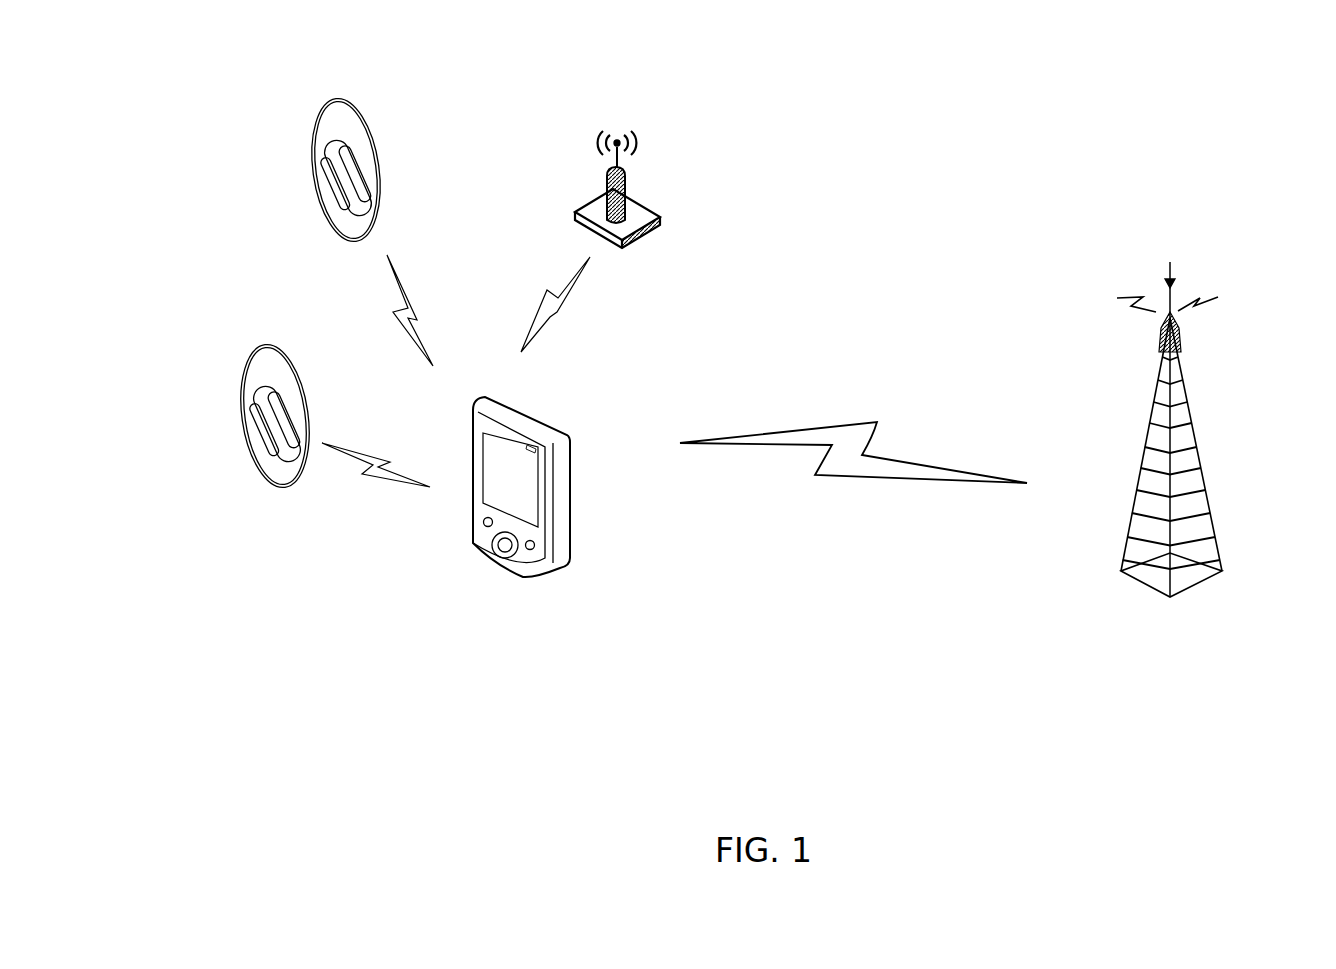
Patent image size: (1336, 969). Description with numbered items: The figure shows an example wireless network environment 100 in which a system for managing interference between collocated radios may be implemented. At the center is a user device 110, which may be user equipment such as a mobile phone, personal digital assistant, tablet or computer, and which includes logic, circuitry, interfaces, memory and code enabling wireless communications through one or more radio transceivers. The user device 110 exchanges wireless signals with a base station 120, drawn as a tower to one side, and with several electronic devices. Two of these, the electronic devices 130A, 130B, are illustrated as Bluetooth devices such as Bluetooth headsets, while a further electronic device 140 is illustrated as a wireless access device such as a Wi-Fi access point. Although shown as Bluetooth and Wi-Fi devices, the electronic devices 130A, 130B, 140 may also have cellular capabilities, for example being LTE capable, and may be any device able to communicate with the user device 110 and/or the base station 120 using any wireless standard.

The network environment 100 is at (1208, 46).
The user device 110 is at (608, 439).
The base station 120 is at (1212, 586).
The electronic device 130A is at (253, 415).
The electronic device 130B is at (320, 168).
The electronic device 140 is at (592, 197).